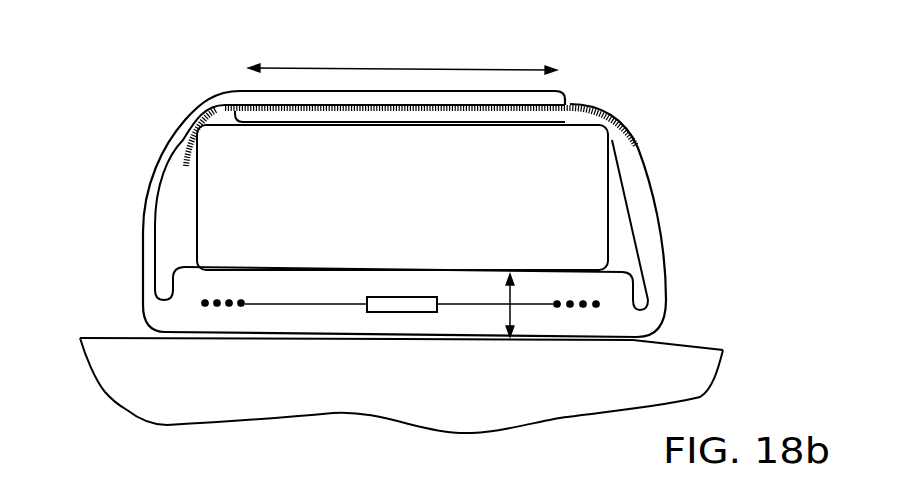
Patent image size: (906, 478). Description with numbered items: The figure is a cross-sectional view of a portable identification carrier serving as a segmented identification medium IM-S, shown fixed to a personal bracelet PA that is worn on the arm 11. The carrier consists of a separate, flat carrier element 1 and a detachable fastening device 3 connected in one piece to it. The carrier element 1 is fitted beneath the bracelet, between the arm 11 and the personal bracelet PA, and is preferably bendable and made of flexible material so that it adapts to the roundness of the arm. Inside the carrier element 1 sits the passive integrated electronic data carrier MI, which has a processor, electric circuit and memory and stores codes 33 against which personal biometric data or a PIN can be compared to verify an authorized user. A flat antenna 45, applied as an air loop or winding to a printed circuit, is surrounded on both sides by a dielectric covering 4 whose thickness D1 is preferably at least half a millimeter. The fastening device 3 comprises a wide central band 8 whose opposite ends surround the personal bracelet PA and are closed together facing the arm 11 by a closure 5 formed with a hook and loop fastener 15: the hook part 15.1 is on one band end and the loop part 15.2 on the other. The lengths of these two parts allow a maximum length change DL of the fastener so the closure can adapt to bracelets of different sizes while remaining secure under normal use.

The carrier element 1 is at (272, 322).
The fastening device 3 is at (140, 193).
The dielectric covering 4 is at (230, 287).
The closure 5 is at (312, 100).
The band 8 is at (170, 145).
The arm 11 is at (110, 375).
The hook and loop fastener 15 is at (573, 107).
The hook part 15.1 is at (197, 97).
The loop part 15.2 is at (557, 124).
The personal biometric encoding codes 33 is at (402, 312).
The antenna 45 is at (201, 303).
The personal bracelet PA is at (410, 176).
The segmented identification medium IM-S is at (300, 301).
The data carrier MI is at (388, 297).
The thickness of dielectric covering D1 is at (510, 300).
The length change of fastener DL is at (402, 51).